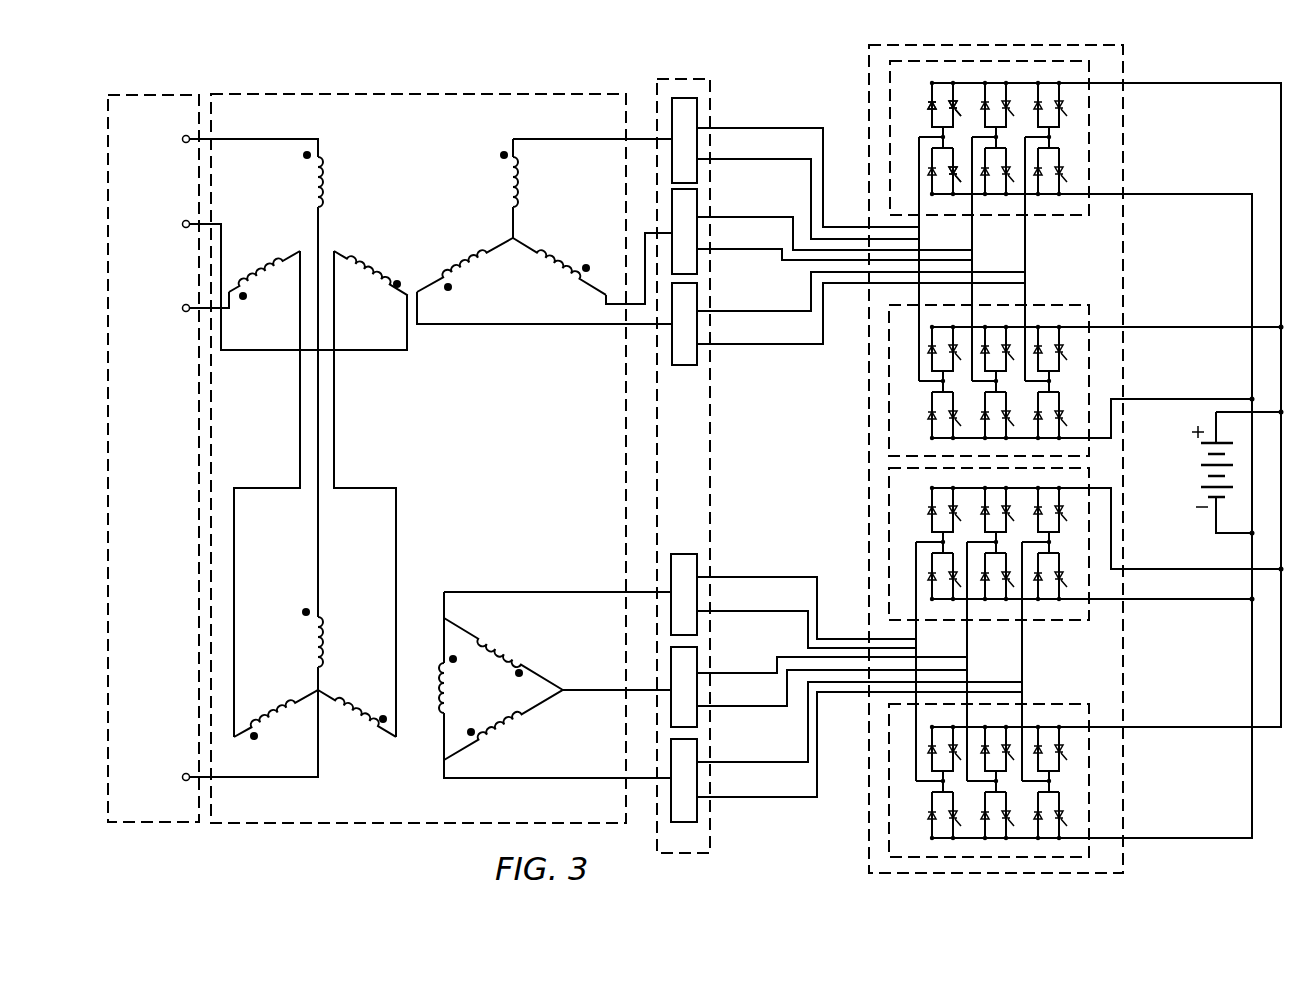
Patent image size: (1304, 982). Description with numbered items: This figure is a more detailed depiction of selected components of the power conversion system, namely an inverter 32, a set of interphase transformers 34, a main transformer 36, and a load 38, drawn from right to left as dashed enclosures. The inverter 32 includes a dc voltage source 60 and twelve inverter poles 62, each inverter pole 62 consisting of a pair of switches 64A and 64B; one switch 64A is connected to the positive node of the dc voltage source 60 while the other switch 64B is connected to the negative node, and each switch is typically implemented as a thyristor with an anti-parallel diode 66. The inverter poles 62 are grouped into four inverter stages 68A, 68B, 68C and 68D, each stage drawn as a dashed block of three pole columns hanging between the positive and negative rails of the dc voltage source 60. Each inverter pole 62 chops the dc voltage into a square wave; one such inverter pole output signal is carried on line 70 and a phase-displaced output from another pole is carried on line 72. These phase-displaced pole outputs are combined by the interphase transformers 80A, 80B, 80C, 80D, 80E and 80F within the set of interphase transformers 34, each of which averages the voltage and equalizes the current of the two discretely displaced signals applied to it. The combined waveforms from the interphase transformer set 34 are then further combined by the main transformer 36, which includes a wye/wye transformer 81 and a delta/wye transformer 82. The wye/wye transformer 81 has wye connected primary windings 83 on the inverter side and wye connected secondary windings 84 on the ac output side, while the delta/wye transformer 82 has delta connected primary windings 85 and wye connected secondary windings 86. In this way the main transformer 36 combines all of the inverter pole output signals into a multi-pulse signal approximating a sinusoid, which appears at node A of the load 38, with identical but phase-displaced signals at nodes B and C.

The inverter 32 is at (1205, 70).
The set of interphase transformers 34 is at (685, 79).
The main transformer 36 is at (452, 94).
The load 38 is at (143, 95).
The dc voltage source 60 is at (1197, 470).
The inverter pole 62 is at (920, 92).
The switch 64A is at (957, 104).
The switch 64B is at (953, 178).
The anti-parallel diode 66 is at (927, 104).
The inverter stage 68A is at (1046, 215).
The inverter stage 68B is at (1047, 304).
The inverter stage 68C is at (1043, 625).
The inverter stage 68D is at (1045, 704).
The line 70 is at (758, 128).
The line 72 is at (767, 158).
The interphase transformer 80A is at (688, 161).
The interphase transformer 80B is at (688, 252).
The interphase transformer 80C is at (688, 345).
The interphase transformer 80D is at (690, 568).
The interphase transformer 80E is at (690, 668).
The interphase transformer 80F is at (690, 762).
The wye/wye transformer 81 is at (433, 341).
The delta/wye transformer 82 is at (548, 660).
The wye connected primary windings 83 is at (498, 233).
The wye connected secondary windings 84 is at (341, 243).
The delta connected primary windings 85 is at (536, 656).
The wye connected secondary windings 86 is at (333, 723).